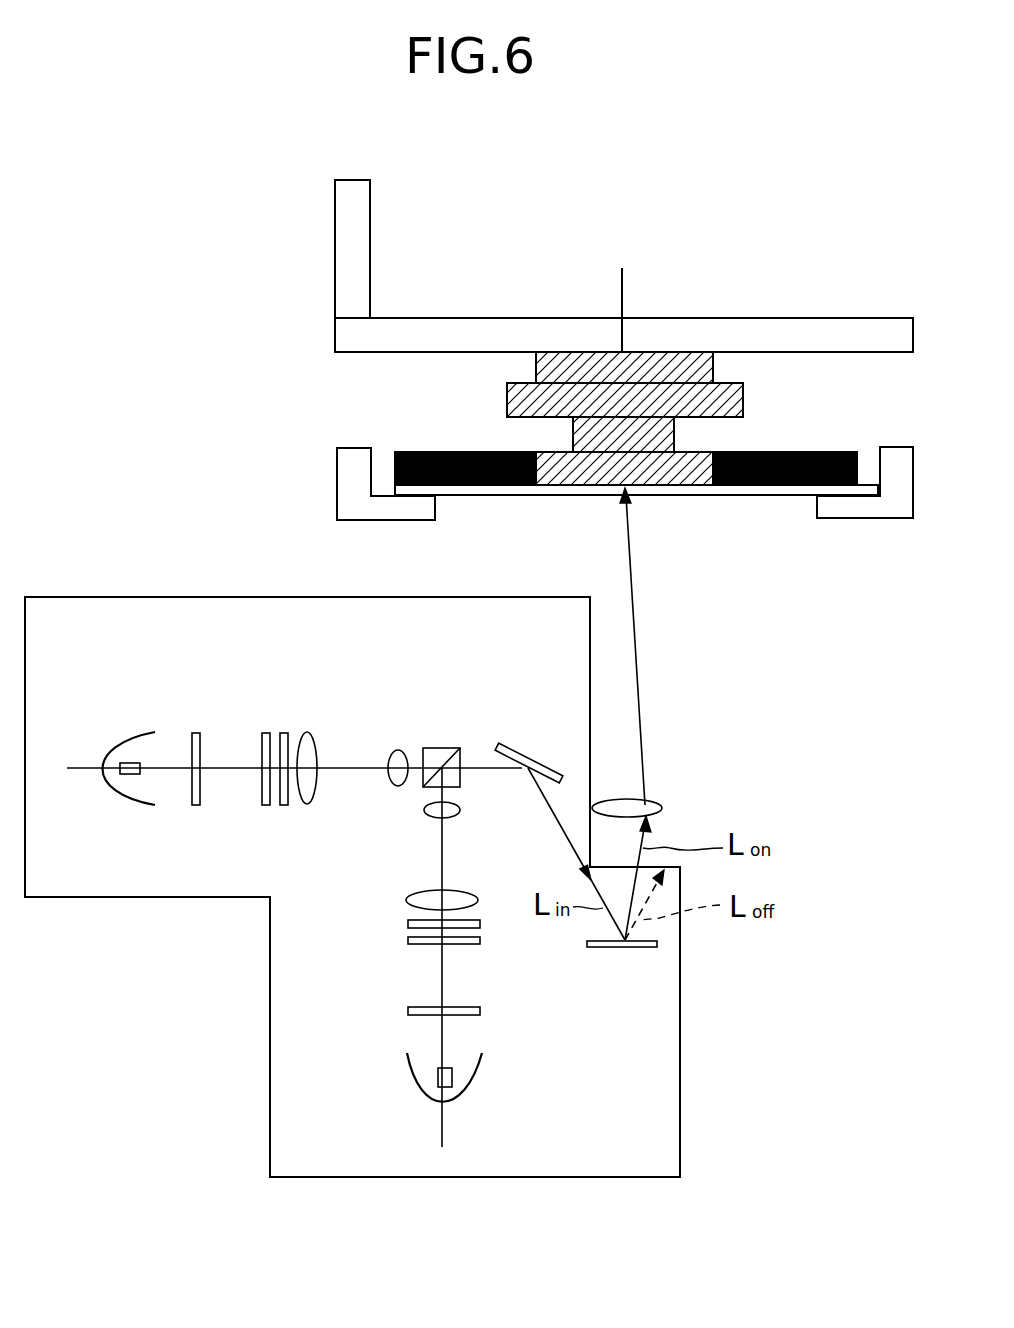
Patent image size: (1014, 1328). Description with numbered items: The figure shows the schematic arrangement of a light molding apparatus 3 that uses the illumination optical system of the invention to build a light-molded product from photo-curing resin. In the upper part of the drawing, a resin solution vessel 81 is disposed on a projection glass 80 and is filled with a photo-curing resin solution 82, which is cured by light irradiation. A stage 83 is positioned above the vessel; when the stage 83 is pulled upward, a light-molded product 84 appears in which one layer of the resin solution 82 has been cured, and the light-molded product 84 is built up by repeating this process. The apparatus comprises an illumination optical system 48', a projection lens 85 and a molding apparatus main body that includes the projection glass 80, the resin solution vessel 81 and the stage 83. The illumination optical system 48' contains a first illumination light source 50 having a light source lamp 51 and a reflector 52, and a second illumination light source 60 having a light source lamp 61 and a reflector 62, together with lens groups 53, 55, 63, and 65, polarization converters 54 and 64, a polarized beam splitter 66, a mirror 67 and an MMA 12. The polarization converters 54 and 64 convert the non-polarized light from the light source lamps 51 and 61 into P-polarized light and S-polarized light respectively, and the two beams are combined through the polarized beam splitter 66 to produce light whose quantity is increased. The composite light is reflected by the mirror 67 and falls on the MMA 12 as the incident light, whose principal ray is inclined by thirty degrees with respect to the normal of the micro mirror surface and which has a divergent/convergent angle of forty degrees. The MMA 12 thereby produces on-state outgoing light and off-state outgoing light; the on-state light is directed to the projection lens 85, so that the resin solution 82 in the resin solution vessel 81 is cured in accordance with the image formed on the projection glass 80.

The light molding apparatus 3 is at (769, 195).
The stage 83 is at (517, 318).
The light-molded product 84 is at (507, 397).
The photo-curing resin solution 82 is at (763, 451).
The resin solution vessel 81 is at (857, 480).
The projection glass 80 is at (710, 495).
The projection lens 85 is at (662, 808).
The illumination light source 50 is at (113, 625).
The light source lamp 51 is at (120, 765).
The reflector 52 is at (142, 732).
The lens group 53 is at (190, 726).
The polarization converter 54 is at (287, 733).
The lens group 55 is at (297, 728).
The polarized beam splitter 66 is at (437, 748).
The mirror 67 is at (512, 745).
The lens group 65 is at (400, 820).
The polarization converter 64 is at (408, 924).
The lens group 63 is at (400, 935).
The illumination light source 60 is at (312, 1072).
The light source lamp 61 is at (438, 1080).
The reflector 62 is at (407, 1060).
The MMA 12 is at (610, 948).
The illumination optical system 48' is at (720, 1010).